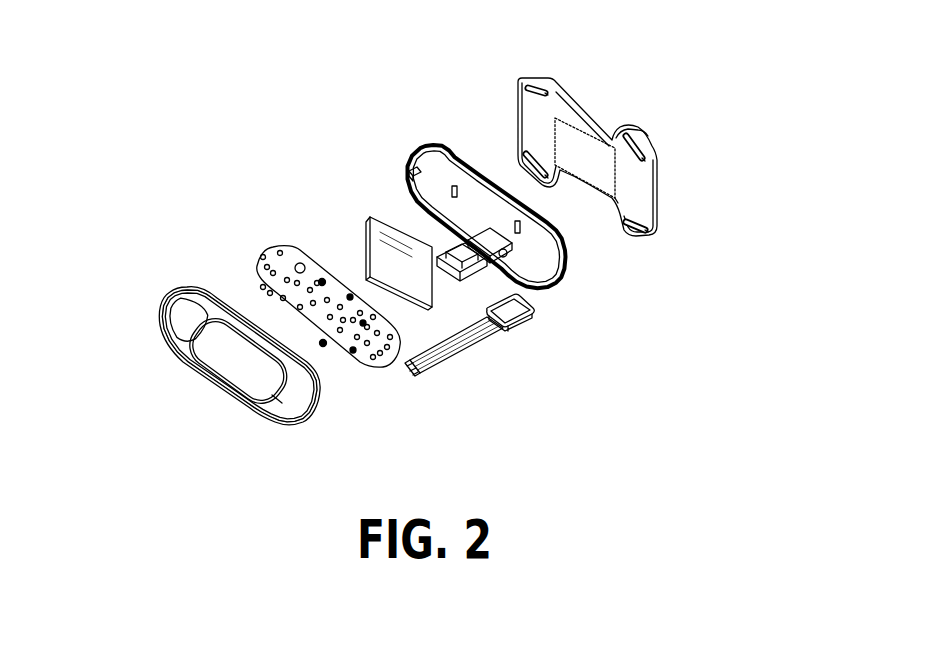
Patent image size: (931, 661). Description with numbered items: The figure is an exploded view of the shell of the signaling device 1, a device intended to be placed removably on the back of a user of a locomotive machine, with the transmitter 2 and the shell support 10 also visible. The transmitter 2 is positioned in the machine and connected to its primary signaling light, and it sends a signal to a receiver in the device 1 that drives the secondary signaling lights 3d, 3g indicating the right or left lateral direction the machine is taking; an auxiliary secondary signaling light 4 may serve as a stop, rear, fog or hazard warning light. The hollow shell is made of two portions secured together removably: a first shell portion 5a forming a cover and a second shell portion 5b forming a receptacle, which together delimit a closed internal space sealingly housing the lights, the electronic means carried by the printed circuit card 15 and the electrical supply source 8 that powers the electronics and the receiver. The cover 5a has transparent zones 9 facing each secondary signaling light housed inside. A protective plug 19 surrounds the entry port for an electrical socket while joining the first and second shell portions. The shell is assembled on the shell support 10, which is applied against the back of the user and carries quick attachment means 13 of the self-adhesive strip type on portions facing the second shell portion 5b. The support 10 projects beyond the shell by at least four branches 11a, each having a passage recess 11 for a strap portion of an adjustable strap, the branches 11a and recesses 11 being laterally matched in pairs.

The signaling device 1 is at (542, 178).
The transmitter 2 is at (467, 340).
The secondary signaling light 3d is at (293, 388).
The secondary signaling light 3g is at (183, 325).
The auxiliary secondary signaling light 4 is at (247, 365).
The first shell portion 5a is at (230, 325).
The second shell portion 5b is at (486, 178).
The electrical supply source 8 is at (400, 243).
The transparent zones 9 is at (247, 343).
The shell support 10 is at (576, 120).
The passage recess 11 is at (548, 90).
The branches 11a is at (555, 98).
The quick attachment means 13 is at (578, 162).
The printed circuit card 15 is at (320, 305).
The protective plug 19 is at (470, 268).